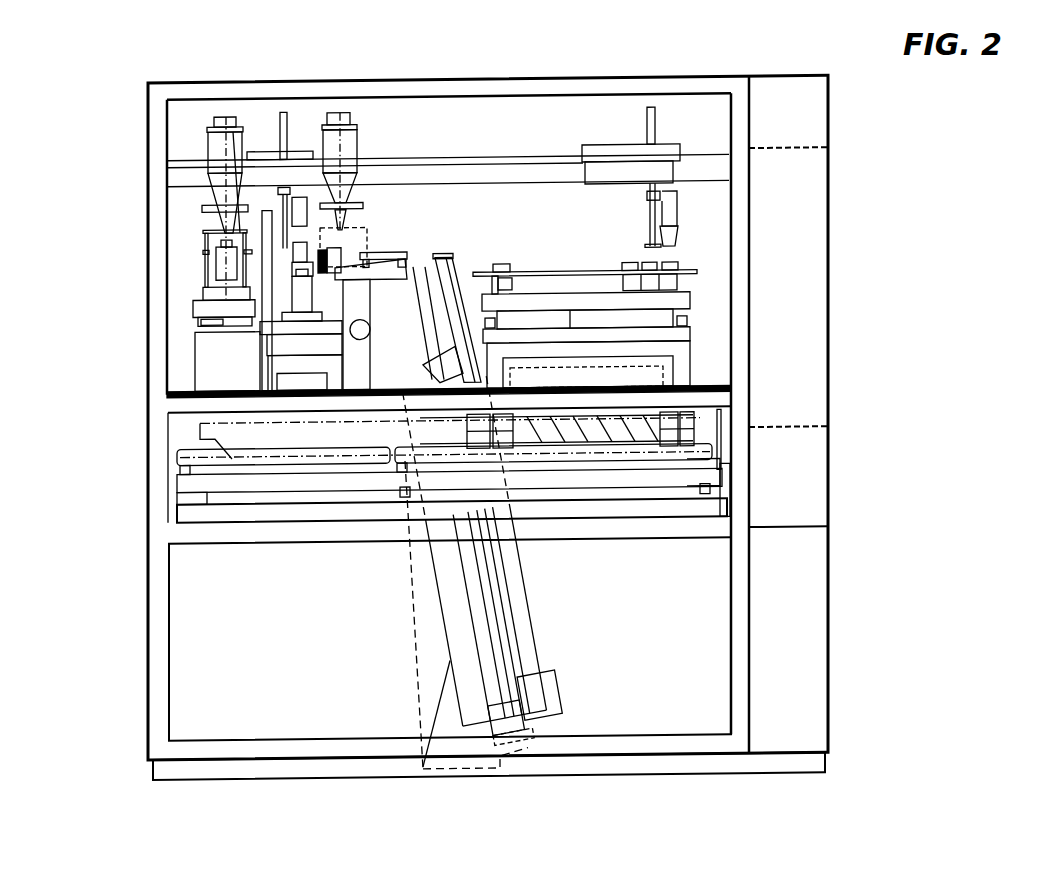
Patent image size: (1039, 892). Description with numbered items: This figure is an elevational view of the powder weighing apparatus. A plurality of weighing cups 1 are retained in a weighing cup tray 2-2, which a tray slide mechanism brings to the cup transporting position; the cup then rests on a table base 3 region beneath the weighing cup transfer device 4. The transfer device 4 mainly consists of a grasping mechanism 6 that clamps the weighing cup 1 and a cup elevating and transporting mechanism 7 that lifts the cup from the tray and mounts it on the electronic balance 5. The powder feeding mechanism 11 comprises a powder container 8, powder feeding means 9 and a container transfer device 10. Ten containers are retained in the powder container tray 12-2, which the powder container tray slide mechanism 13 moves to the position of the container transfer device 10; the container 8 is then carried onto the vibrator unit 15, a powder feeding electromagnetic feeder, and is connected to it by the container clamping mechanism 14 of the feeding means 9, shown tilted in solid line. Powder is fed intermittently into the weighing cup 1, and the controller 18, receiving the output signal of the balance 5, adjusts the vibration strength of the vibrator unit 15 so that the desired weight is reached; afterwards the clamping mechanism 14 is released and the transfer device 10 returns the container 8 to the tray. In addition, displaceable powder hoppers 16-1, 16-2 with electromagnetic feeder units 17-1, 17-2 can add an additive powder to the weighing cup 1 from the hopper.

The weighing cup 1 is at (700, 306).
The weighing cup tray 2-2 is at (700, 284).
The table base 3 is at (695, 341).
The weighing cup transfer device 4 is at (723, 145).
The electronic balance 5 is at (260, 333).
The grasping mechanism 6 is at (680, 206).
The cup elevating and transporting mechanism 7 is at (655, 152).
The powder container 8 is at (328, 262).
The powder feeding means 9 is at (398, 265).
The container transfer device 10 is at (520, 617).
The powder feeding mechanism 11 is at (400, 289).
The powder container tray 12-2 is at (712, 431).
The powder container tray slide mechanism 13 is at (715, 461).
The container clamping mechanism 14 is at (341, 268).
The vibrator unit 15 is at (440, 268).
The powder hopper 16-1 is at (215, 144).
The powder hopper 16-2 is at (350, 117).
The electromagnetic feeder unit 17-1 is at (208, 216).
The electromagnetic feeder unit 17-2 is at (365, 212).
The controller 18 is at (812, 138).